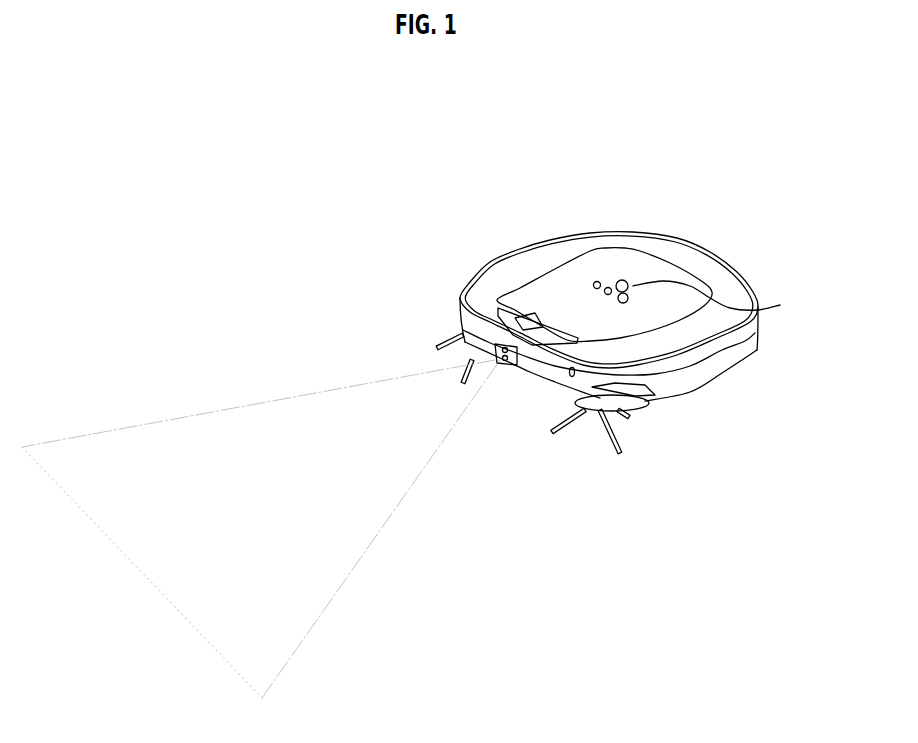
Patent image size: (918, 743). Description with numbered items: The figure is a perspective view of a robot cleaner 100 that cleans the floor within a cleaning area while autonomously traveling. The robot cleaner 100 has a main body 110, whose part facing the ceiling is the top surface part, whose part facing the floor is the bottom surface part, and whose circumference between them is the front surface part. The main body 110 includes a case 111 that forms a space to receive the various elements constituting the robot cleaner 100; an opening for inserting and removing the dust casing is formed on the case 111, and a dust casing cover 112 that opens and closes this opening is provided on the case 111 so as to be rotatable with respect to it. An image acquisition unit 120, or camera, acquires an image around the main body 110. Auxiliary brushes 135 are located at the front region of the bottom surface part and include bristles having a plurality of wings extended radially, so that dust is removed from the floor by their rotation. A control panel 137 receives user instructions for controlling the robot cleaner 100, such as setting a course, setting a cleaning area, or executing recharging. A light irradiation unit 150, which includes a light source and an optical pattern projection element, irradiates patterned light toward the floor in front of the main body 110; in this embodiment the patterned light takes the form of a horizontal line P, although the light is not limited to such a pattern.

The robot cleaner 100 is at (434, 393).
The main body 110 is at (595, 286).
The case 111 is at (609, 248).
The dust casing cover 112 is at (604, 234).
The image acquisition unit 120 is at (509, 285).
The auxiliary brushes 135 is at (542, 408).
The control panel 137 is at (739, 296).
The light irradiation unit 150 is at (431, 353).
The horizontal line P is at (261, 529).